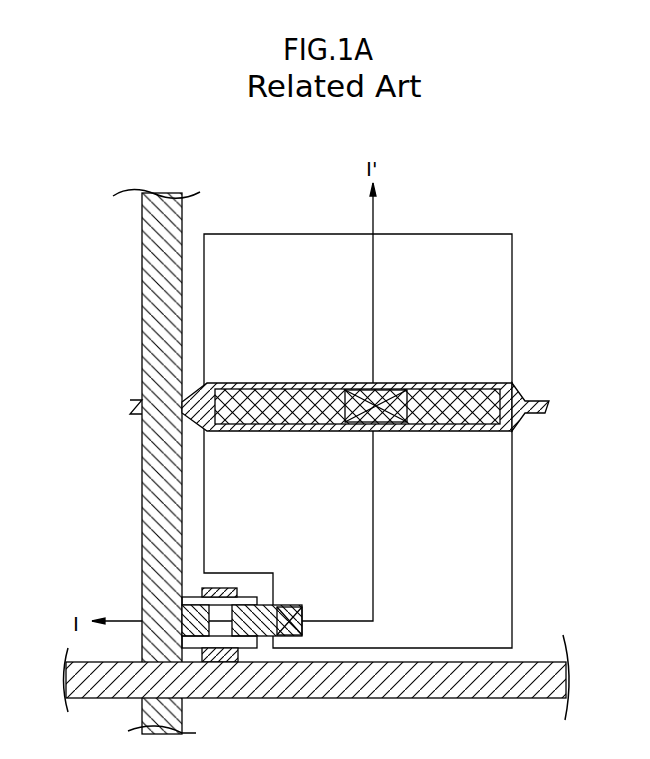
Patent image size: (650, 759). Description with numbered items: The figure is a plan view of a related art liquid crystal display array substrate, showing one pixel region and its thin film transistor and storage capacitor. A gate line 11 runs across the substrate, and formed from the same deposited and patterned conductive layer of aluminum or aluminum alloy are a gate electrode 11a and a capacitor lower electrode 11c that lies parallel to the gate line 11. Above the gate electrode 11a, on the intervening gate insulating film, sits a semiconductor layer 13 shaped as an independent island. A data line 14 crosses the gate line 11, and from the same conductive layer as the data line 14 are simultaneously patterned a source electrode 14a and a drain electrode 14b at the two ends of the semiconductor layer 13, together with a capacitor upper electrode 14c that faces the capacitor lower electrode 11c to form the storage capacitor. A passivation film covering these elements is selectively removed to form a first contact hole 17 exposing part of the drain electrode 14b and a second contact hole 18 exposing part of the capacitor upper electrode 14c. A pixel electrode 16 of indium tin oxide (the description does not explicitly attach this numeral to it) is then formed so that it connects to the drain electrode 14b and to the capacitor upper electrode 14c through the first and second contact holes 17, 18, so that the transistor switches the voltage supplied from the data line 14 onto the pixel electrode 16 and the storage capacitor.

The gate line 11 is at (461, 688).
The gate electrode 11a is at (218, 663).
The capacitor lower electrode 11c is at (538, 400).
The semiconductor layer 13 is at (221, 596).
The data line 14 is at (150, 516).
The source electrode 14a is at (190, 616).
The drain electrode 14b is at (258, 640).
The capacitor upper electrode 14c is at (278, 384).
The pixel electrode 16 is at (503, 547).
The first contact hole 17 is at (289, 637).
The second contact hole 18 is at (385, 390).